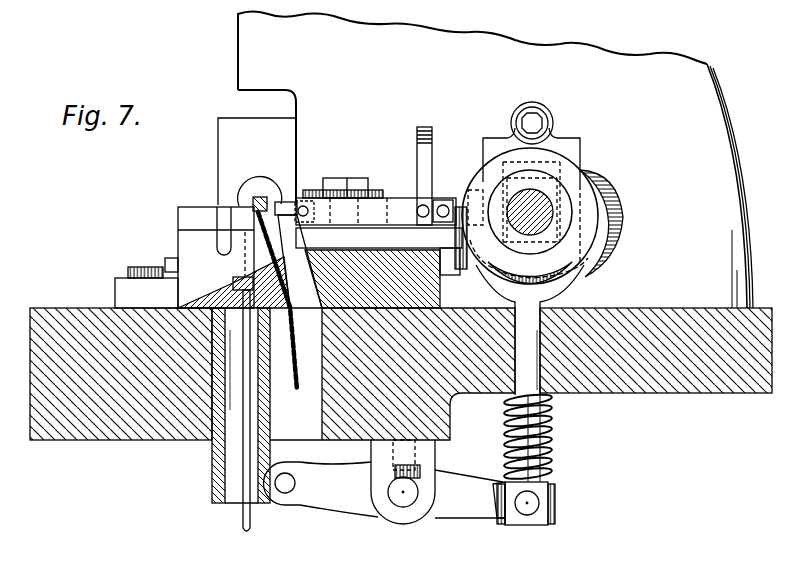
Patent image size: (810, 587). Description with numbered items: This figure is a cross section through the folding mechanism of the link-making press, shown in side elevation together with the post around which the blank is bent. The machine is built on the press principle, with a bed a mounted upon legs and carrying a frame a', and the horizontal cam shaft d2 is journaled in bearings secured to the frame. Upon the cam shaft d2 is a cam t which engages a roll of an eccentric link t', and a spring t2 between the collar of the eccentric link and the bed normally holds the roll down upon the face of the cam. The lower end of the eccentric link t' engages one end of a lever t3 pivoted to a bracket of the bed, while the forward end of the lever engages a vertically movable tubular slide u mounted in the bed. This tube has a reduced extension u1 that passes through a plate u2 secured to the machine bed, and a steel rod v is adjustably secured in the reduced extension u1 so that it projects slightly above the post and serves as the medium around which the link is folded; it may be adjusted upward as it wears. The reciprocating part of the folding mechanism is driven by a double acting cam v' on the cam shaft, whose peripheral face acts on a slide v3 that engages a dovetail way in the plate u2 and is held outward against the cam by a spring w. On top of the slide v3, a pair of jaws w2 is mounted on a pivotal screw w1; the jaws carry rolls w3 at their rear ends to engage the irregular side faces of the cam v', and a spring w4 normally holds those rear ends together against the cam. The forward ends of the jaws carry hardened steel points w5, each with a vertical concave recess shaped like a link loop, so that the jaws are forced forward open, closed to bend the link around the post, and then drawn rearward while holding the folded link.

The bed a is at (401, 374).
The frame a' is at (485, 160).
The tubular slide u is at (212, 462).
The reduced extension u1 is at (222, 292).
The plate u2 is at (234, 257).
The steel rod v is at (270, 344).
The double acting cam v' is at (530, 218).
The slide v3 is at (379, 238).
The spring w is at (455, 265).
The pivotal screw w1 is at (347, 188).
The jaws w2 is at (375, 211).
The rolls w3 is at (497, 195).
The spring w4 is at (426, 127).
The hardened steel points w5 is at (274, 190).
The cam t is at (542, 263).
The eccentric link t' is at (540, 143).
The spring t2 is at (549, 450).
The lever t3 is at (385, 482).
The cam shaft d2 is at (545, 222).